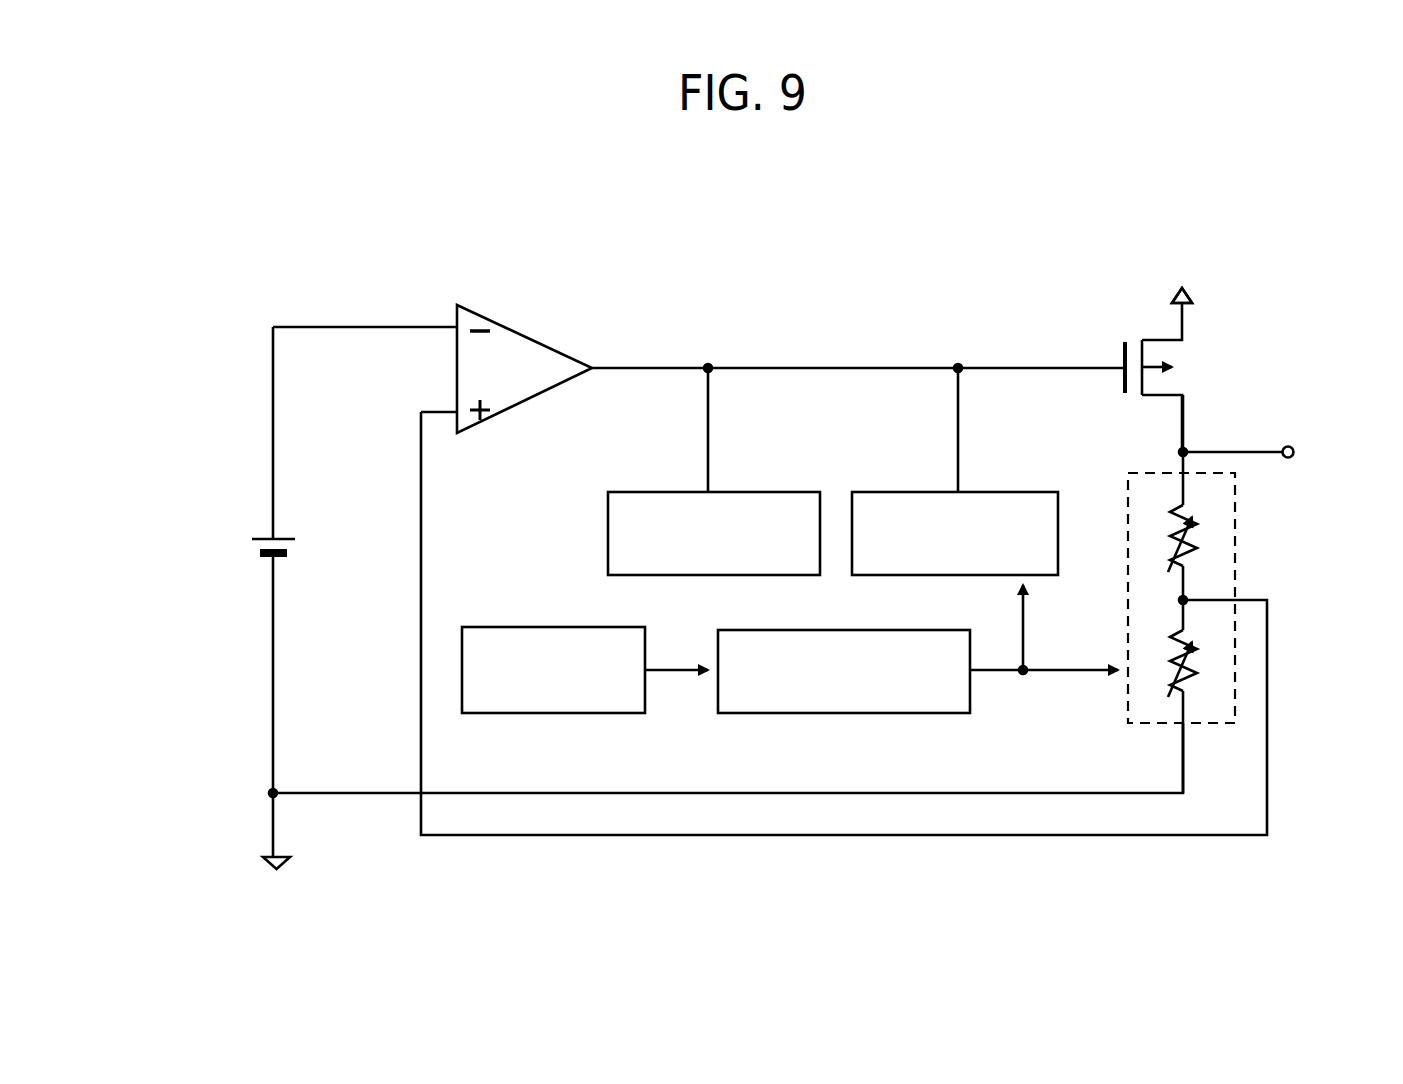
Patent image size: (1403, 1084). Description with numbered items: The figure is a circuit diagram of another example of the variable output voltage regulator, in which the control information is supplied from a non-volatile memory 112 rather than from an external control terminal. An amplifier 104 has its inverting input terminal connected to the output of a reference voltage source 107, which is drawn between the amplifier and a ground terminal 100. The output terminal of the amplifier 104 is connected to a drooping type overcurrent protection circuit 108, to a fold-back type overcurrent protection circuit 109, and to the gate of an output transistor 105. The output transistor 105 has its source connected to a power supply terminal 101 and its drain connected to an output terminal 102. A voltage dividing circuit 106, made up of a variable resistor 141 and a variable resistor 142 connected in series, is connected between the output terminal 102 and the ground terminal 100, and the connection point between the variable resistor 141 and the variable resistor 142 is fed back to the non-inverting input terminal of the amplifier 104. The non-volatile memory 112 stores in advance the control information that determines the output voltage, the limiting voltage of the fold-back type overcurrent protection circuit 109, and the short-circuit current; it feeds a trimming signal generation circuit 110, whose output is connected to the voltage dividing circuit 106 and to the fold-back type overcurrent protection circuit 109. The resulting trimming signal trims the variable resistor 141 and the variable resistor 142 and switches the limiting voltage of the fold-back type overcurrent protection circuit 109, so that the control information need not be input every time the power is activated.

The ground terminal 100 is at (296, 891).
The power supply terminal 101 is at (1134, 331).
The output terminal 102 is at (1275, 429).
The amplifier 104 is at (510, 315).
The output transistor 105 is at (1190, 343).
The voltage dividing circuit 106 is at (1237, 568).
The reference voltage source 107 is at (237, 530).
The drooping type overcurrent protection circuit 108 is at (607, 539).
The fold-back type overcurrent protection circuit 109 is at (897, 487).
The trimming signal generation circuit 110 is at (717, 690).
The non-volatile memory 112 is at (460, 650).
The variable resistor 141 is at (1158, 517).
The variable resistor 142 is at (1160, 668).